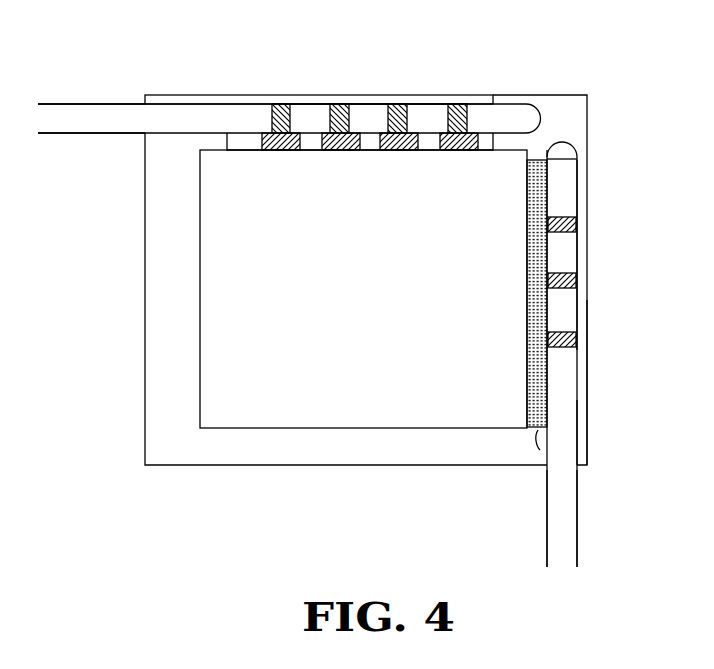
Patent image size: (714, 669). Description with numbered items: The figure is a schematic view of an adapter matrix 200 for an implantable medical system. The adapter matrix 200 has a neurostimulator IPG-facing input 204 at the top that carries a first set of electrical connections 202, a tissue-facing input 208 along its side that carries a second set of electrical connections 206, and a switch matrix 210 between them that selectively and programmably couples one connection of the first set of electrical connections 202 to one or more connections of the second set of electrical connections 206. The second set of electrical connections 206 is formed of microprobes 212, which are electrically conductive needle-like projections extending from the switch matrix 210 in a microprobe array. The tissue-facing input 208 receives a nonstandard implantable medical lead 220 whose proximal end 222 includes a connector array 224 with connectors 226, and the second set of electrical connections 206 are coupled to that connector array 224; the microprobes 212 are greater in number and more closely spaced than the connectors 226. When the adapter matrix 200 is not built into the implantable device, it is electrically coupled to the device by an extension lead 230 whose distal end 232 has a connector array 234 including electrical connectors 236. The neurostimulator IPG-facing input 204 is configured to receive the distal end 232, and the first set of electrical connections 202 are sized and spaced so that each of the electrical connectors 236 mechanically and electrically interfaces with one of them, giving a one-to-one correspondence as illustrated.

The adapter matrix 200 is at (489, 85).
The first set of electrical connections 202 is at (278, 152).
The neurostimulator IPG-facing input 204 is at (228, 84).
The second set of electrical connections 206 is at (528, 348).
The tissue-facing input 208 is at (601, 384).
The switch matrix 210 is at (378, 294).
The microprobes 212 is at (538, 430).
The nonstandard implantable medical lead 220 is at (568, 517).
The proximal end 222 is at (567, 437).
The connector array 224 is at (594, 160).
The connectors 226 is at (562, 216).
The extension lead 230 is at (80, 125).
The distal end 232 is at (172, 116).
The connector array 234 is at (473, 89).
The electrical connectors 236 is at (273, 113).